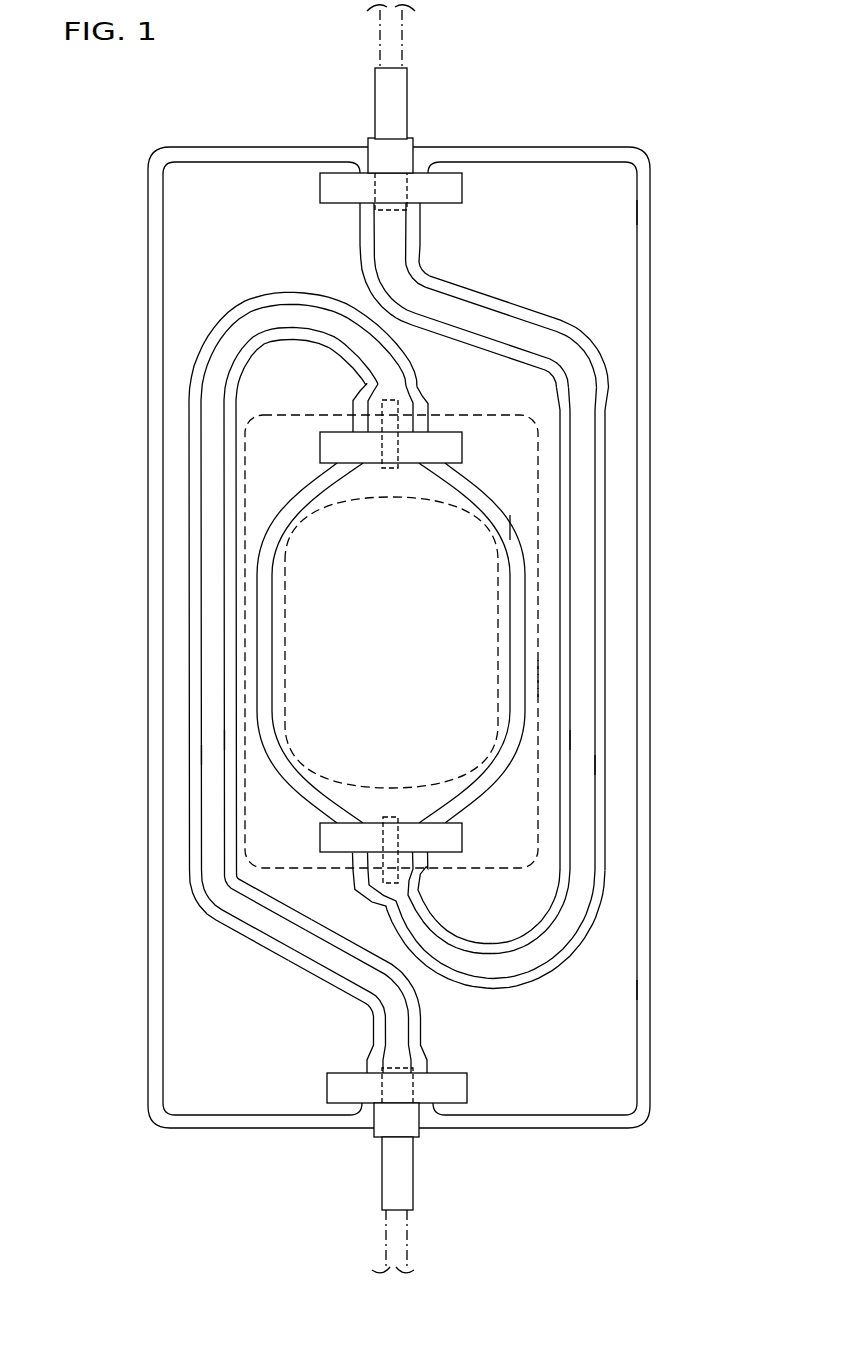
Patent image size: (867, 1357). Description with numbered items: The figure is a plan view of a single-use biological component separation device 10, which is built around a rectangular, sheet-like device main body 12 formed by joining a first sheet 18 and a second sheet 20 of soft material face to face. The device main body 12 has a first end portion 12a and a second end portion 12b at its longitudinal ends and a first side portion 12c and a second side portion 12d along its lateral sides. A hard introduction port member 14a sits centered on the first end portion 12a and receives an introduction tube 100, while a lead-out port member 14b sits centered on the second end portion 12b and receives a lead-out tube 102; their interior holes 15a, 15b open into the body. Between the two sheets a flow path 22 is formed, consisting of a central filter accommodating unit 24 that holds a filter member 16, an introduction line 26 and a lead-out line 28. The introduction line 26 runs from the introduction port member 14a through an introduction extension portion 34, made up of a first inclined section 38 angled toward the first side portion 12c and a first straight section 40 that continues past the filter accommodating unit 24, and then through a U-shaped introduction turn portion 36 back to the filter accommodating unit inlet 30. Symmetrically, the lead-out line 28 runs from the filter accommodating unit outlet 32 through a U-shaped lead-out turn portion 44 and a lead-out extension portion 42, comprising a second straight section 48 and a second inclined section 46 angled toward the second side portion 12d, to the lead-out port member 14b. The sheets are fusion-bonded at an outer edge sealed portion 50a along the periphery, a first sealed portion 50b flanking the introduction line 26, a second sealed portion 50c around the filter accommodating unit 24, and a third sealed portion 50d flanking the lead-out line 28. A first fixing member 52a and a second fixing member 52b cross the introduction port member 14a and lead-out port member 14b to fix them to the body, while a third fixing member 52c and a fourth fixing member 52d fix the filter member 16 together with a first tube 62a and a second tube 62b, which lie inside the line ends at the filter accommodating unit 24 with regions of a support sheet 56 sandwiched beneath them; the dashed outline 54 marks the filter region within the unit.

The biological component separation device 10 is at (245, 46).
The device main body 12 is at (420, 635).
The first end portion 12a is at (246, 147).
The second end portion 12b is at (237, 1130).
The first side portion 12c is at (643, 1046).
The second side portion 12d is at (150, 1051).
The introduction port member 14a is at (407, 99).
The lead-out port member 14b is at (414, 1170).
The interior hole 15a is at (390, 92).
The interior hole 15b is at (393, 1175).
The filter member 16 is at (236, 554).
The first sheet 18 is at (619, 960).
The second sheet 20 is at (621, 990).
The flow path 22 is at (459, 289).
The filter accommodating unit 24 is at (457, 489).
The introduction line 26 is at (586, 605).
The lead-out line 28 is at (206, 632).
The filter accommodating unit inlet 30 is at (410, 856).
The filter accommodating unit outlet 32 is at (377, 410).
The introduction extension portion 34 is at (580, 343).
The introduction turn portion 36 is at (521, 958).
The first inclined section 38 is at (523, 327).
The first straight section 40 is at (583, 404).
The lead-out extension portion 42 is at (234, 970).
The lead-out turn portion 44 is at (289, 320).
The second inclined section 46 is at (258, 933).
The second straight section 48 is at (212, 868).
The outer edge sealed portion 50a is at (637, 213).
The first sealed portion 50b is at (600, 765).
The second sealed portion 50c is at (509, 528).
The third sealed portion 50d is at (236, 737).
The first fixing member 52a is at (452, 188).
The second fixing member 52b is at (455, 1088).
The third fixing member 52c is at (452, 833).
The fourth fixing member 52d is at (332, 447).
The inner bag outline 54 is at (500, 655).
The support sheet 56 is at (540, 676).
The first tube 62a is at (392, 884).
The second tube 62b is at (397, 401).
The introduction tube 100 is at (400, 35).
The lead-out tube 102 is at (405, 1241).